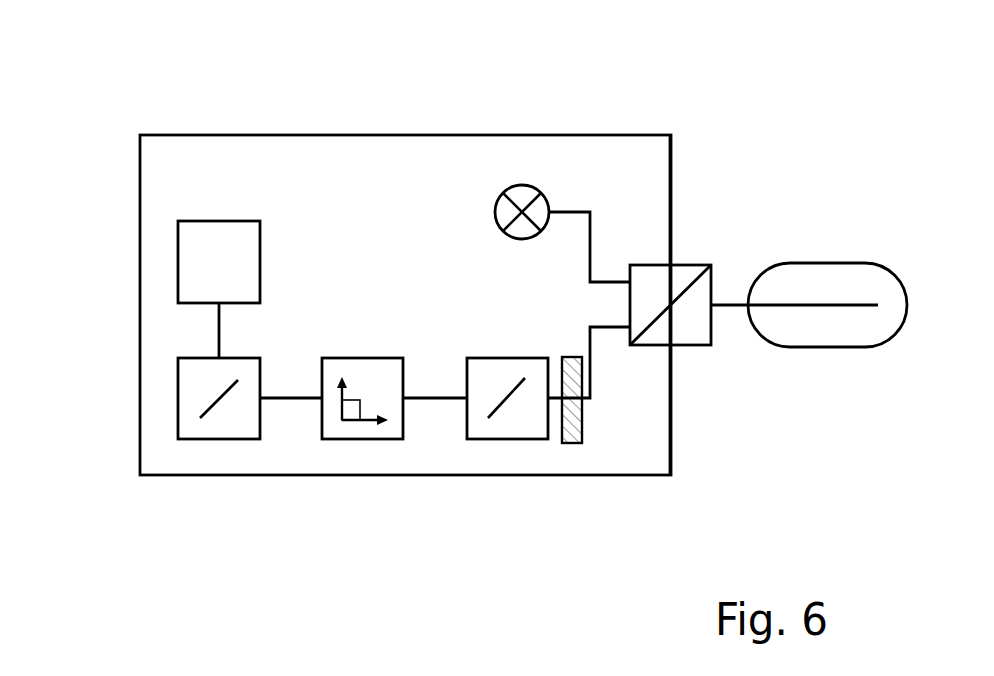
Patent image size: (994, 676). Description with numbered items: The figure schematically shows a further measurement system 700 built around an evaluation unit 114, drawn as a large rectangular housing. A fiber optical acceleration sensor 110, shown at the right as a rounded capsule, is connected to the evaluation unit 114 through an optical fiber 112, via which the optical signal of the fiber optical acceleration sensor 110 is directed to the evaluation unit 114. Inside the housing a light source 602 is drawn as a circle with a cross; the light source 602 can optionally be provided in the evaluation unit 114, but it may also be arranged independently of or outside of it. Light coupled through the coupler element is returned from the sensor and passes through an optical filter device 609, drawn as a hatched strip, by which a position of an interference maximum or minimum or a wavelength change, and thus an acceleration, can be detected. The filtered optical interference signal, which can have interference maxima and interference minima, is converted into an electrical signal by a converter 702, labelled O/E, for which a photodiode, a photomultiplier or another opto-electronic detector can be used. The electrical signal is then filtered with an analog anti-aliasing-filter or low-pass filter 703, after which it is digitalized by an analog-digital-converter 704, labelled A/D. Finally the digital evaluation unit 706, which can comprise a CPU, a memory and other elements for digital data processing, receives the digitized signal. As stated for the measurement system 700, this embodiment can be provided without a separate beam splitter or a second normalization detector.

The measurement system 700 is at (146, 110).
The evaluation unit 114 is at (671, 170).
The digital evaluation unit 706 is at (178, 262).
The analog-digital-converter 704 is at (219, 440).
The analog anti-aliasing-filter 703 is at (362, 440).
The converter 702 is at (507, 440).
The optical filter device 609 is at (578, 357).
The light source 602 is at (520, 186).
The optical fiber 112 is at (733, 306).
The fiber optical acceleration sensor 110 is at (855, 263).